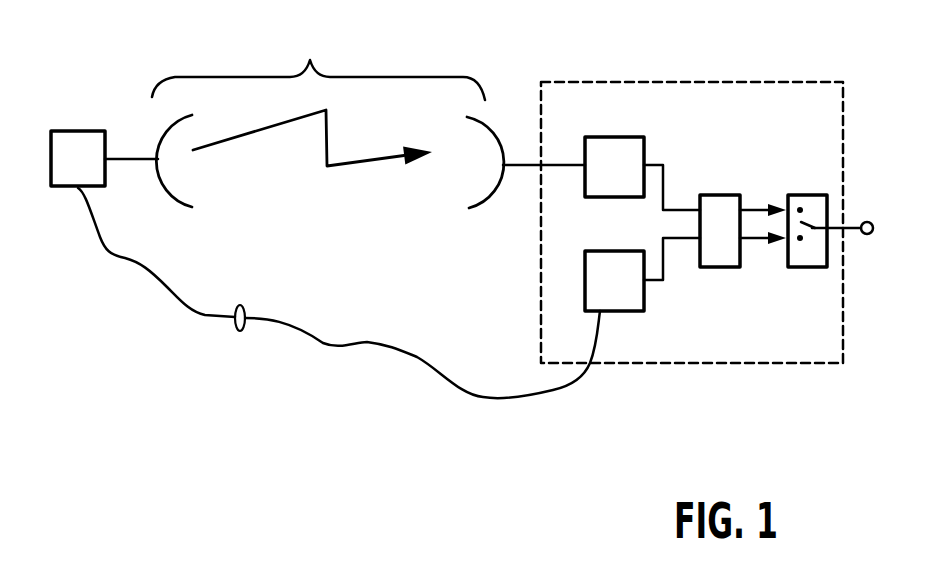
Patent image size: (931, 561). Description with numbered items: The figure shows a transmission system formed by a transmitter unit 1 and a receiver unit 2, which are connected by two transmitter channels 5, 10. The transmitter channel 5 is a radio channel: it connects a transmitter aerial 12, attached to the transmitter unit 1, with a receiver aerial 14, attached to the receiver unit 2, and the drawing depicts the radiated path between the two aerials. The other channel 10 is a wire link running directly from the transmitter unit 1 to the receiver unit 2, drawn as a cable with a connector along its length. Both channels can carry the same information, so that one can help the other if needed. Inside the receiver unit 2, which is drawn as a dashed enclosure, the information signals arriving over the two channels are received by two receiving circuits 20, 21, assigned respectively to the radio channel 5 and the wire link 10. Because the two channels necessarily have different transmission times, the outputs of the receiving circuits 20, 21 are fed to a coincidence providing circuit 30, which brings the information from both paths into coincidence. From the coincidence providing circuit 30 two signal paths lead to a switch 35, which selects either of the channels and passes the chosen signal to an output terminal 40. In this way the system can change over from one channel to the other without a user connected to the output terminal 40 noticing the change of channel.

The transmitter unit 1 is at (68, 130).
The receiver unit 2 is at (727, 82).
The transmitter channel 5 is at (310, 58).
The transmitter channel 10 is at (245, 330).
The transmitter aerial 12 is at (160, 137).
The receiver aerial 14 is at (498, 140).
The receiving circuit 20 is at (613, 137).
The receiving circuit 21 is at (625, 312).
The coincidence providing circuit 30 is at (715, 195).
The switch 35 is at (808, 195).
The output terminal 40 is at (855, 244).